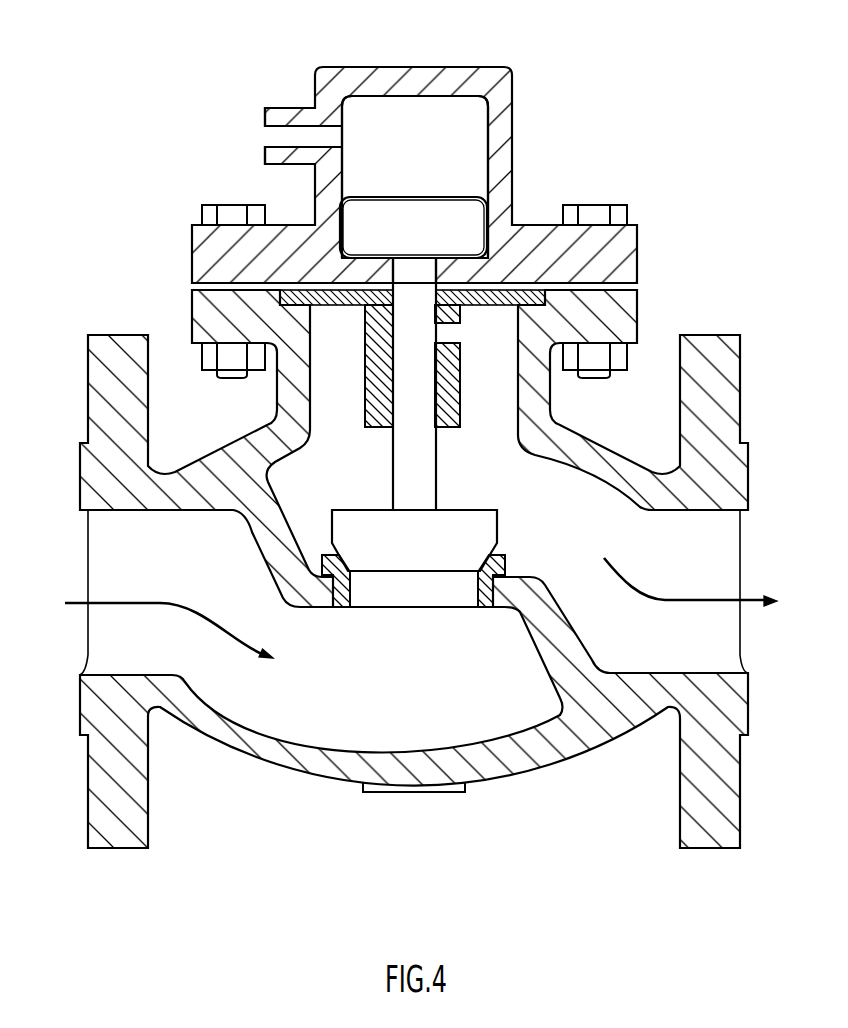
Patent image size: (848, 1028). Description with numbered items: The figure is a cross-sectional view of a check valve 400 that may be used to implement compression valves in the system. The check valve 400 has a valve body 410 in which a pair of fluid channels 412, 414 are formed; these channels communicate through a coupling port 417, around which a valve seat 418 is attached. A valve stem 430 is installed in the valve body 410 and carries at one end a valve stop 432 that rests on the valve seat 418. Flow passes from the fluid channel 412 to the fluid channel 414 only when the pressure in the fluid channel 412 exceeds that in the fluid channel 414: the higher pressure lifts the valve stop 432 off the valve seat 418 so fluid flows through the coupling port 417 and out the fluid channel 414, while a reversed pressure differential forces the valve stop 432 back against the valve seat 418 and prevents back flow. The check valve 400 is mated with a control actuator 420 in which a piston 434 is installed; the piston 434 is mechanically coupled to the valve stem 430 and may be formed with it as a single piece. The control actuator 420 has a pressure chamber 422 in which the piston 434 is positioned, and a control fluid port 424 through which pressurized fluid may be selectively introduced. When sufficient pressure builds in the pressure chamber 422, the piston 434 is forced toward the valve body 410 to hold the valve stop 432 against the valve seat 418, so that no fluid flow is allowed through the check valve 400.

The check valve 400 is at (162, 138).
The valve body 410 is at (735, 378).
The fluid channel 412 is at (118, 515).
The fluid channel 414 is at (718, 512).
The coupling port 417 is at (428, 606).
The valve seat 418 is at (506, 562).
The control actuator 420 is at (503, 163).
The pressure chamber 422 is at (412, 113).
The control fluid port 424 is at (270, 135).
The valve stem 430 is at (394, 458).
The valve stop 432 is at (473, 508).
The piston 434 is at (410, 210).